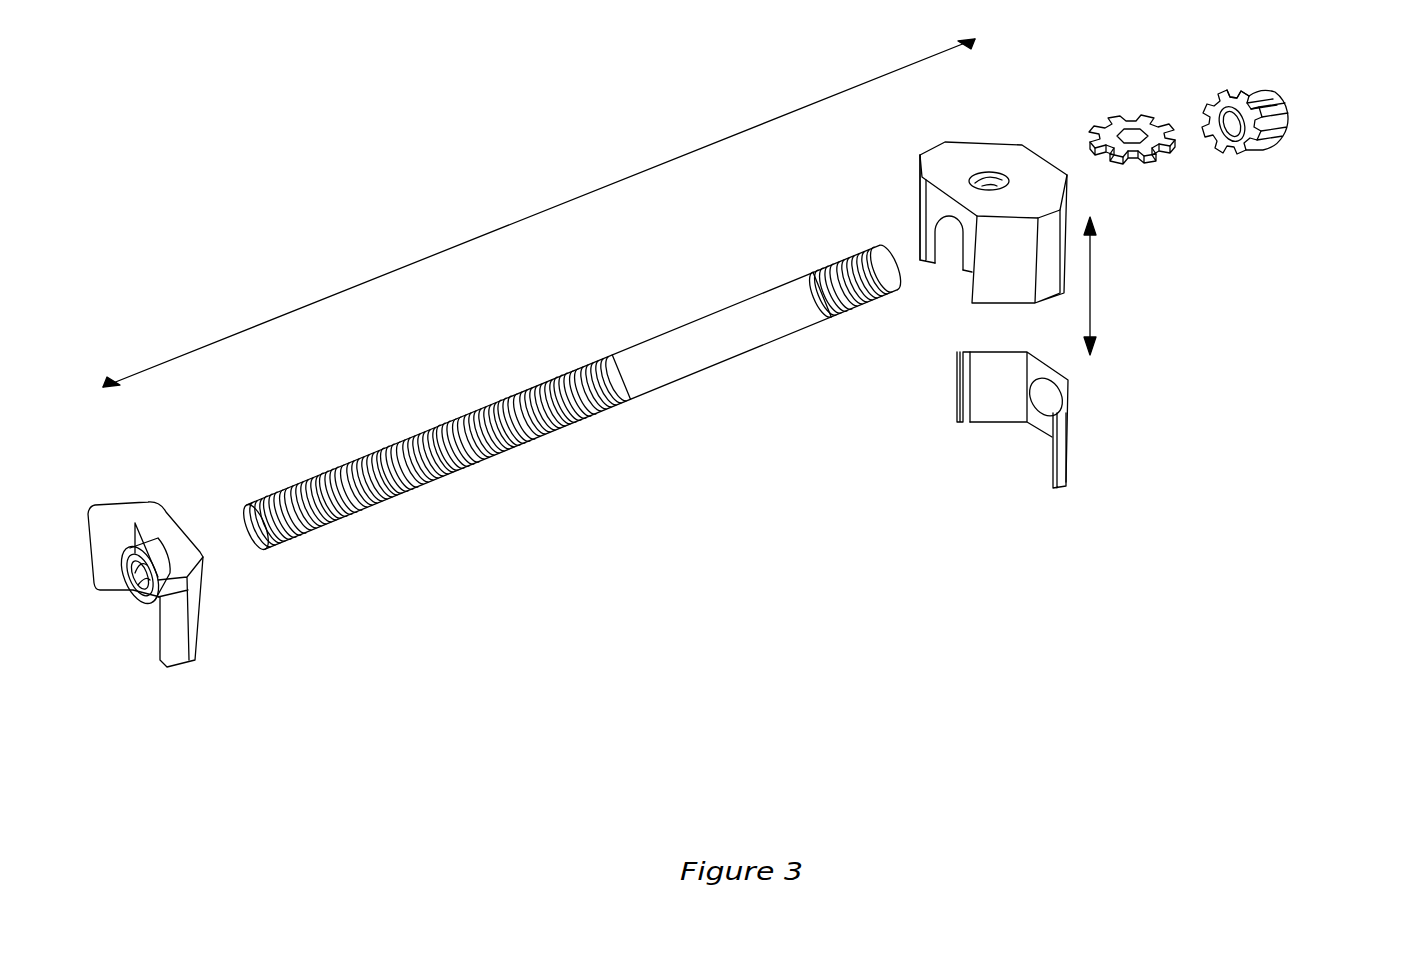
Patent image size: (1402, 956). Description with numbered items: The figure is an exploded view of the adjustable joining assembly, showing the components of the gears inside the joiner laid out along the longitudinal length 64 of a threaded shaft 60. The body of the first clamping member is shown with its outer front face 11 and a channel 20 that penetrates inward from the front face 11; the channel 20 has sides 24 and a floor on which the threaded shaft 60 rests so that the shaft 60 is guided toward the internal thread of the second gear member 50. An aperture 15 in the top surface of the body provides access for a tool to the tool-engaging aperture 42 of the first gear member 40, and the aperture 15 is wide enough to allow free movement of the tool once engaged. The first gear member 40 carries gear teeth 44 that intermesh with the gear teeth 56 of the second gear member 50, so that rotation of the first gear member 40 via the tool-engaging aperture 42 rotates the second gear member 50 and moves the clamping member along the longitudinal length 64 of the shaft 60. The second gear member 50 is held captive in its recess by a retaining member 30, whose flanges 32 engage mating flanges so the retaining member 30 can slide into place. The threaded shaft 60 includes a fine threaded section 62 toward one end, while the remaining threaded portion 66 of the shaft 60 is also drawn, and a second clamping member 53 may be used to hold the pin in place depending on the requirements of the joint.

The outer front face 11 is at (938, 212).
The aperture 15 is at (1000, 180).
The channel 20 is at (941, 222).
The sides 24 is at (940, 253).
The retaining member 30 is at (1038, 466).
The flanges 32 is at (957, 422).
The first gear member 40 is at (1174, 122).
The tool-engaging aperture 42 is at (1135, 118).
The gear teeth 44 is at (1148, 163).
The second gear member 50 is at (1300, 107).
The second clamping member 53 is at (190, 637).
The gear teeth 56 is at (1265, 105).
The threaded shaft 60 is at (570, 395).
The fine threaded section 62 is at (816, 268).
The longitudinal length 64 is at (560, 203).
The rod threads 66 is at (440, 490).